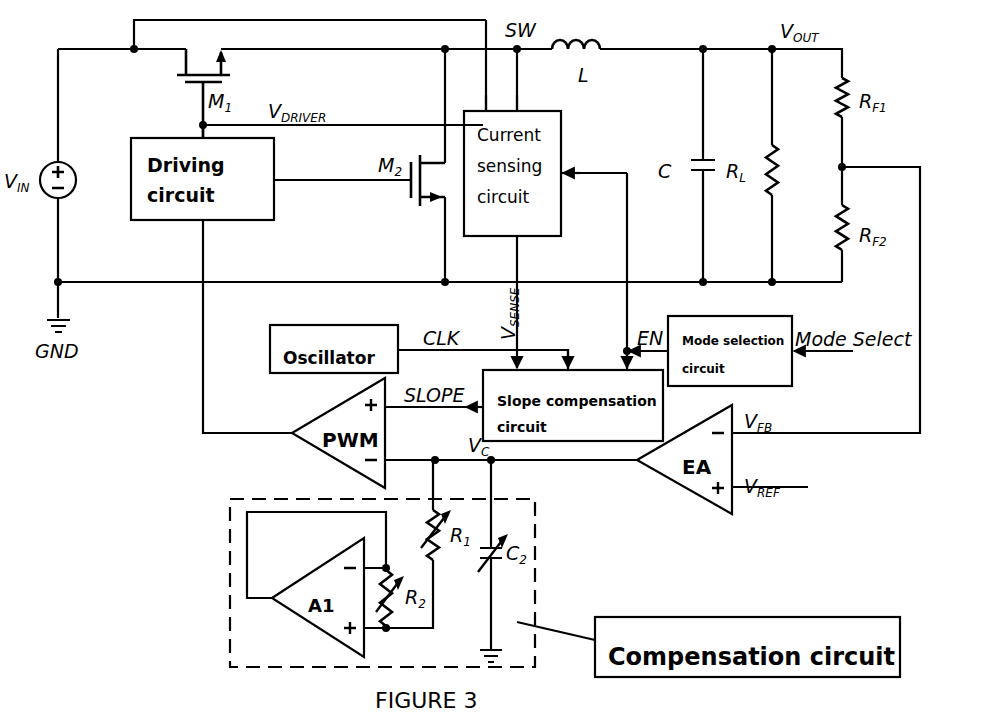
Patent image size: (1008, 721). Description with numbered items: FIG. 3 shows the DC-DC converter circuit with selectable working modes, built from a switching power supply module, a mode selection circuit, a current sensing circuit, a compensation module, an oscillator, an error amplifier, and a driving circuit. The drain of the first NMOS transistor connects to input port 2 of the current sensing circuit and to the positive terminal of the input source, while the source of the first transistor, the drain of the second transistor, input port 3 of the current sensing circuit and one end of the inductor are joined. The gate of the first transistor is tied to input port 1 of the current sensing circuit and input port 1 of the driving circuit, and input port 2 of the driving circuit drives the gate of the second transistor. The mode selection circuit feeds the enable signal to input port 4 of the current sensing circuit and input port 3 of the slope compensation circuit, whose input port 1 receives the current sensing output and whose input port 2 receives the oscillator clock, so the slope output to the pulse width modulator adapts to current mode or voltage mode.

The input port 1 is at (331, 243).
The input port 2 is at (421, 226).
The input port 3 is at (572, 224).
The input port 4 is at (572, 159).